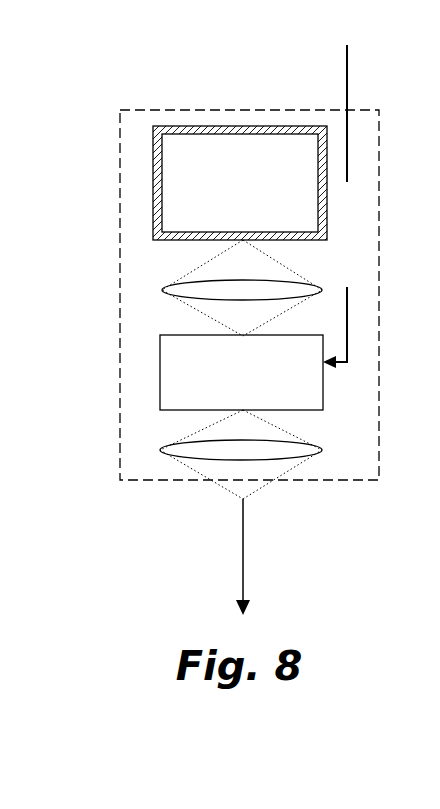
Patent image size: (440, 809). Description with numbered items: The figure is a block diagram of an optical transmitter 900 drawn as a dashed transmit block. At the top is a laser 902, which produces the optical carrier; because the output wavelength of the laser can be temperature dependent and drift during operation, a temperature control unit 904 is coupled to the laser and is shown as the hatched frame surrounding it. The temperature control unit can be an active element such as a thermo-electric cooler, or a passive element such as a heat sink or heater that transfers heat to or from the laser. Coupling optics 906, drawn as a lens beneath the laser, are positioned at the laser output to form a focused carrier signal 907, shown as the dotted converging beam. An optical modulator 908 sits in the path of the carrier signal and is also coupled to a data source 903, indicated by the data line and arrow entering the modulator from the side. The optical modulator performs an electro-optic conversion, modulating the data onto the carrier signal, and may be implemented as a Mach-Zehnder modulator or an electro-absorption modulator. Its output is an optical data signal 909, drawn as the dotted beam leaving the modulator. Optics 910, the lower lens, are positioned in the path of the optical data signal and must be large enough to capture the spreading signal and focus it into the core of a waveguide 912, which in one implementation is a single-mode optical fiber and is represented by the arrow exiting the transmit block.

The optical transmitter 900 is at (132, 70).
The laser 902 is at (240, 183).
The data source 903 is at (347, 76).
The temperature control unit 904 is at (153, 207).
The coupling optics 906 is at (163, 290).
The carrier signal 907 is at (235, 313).
The optical modulator 908 is at (241, 372).
The optical data signal 909 is at (220, 430).
The optics 910 is at (195, 450).
The waveguide 912 is at (243, 568).